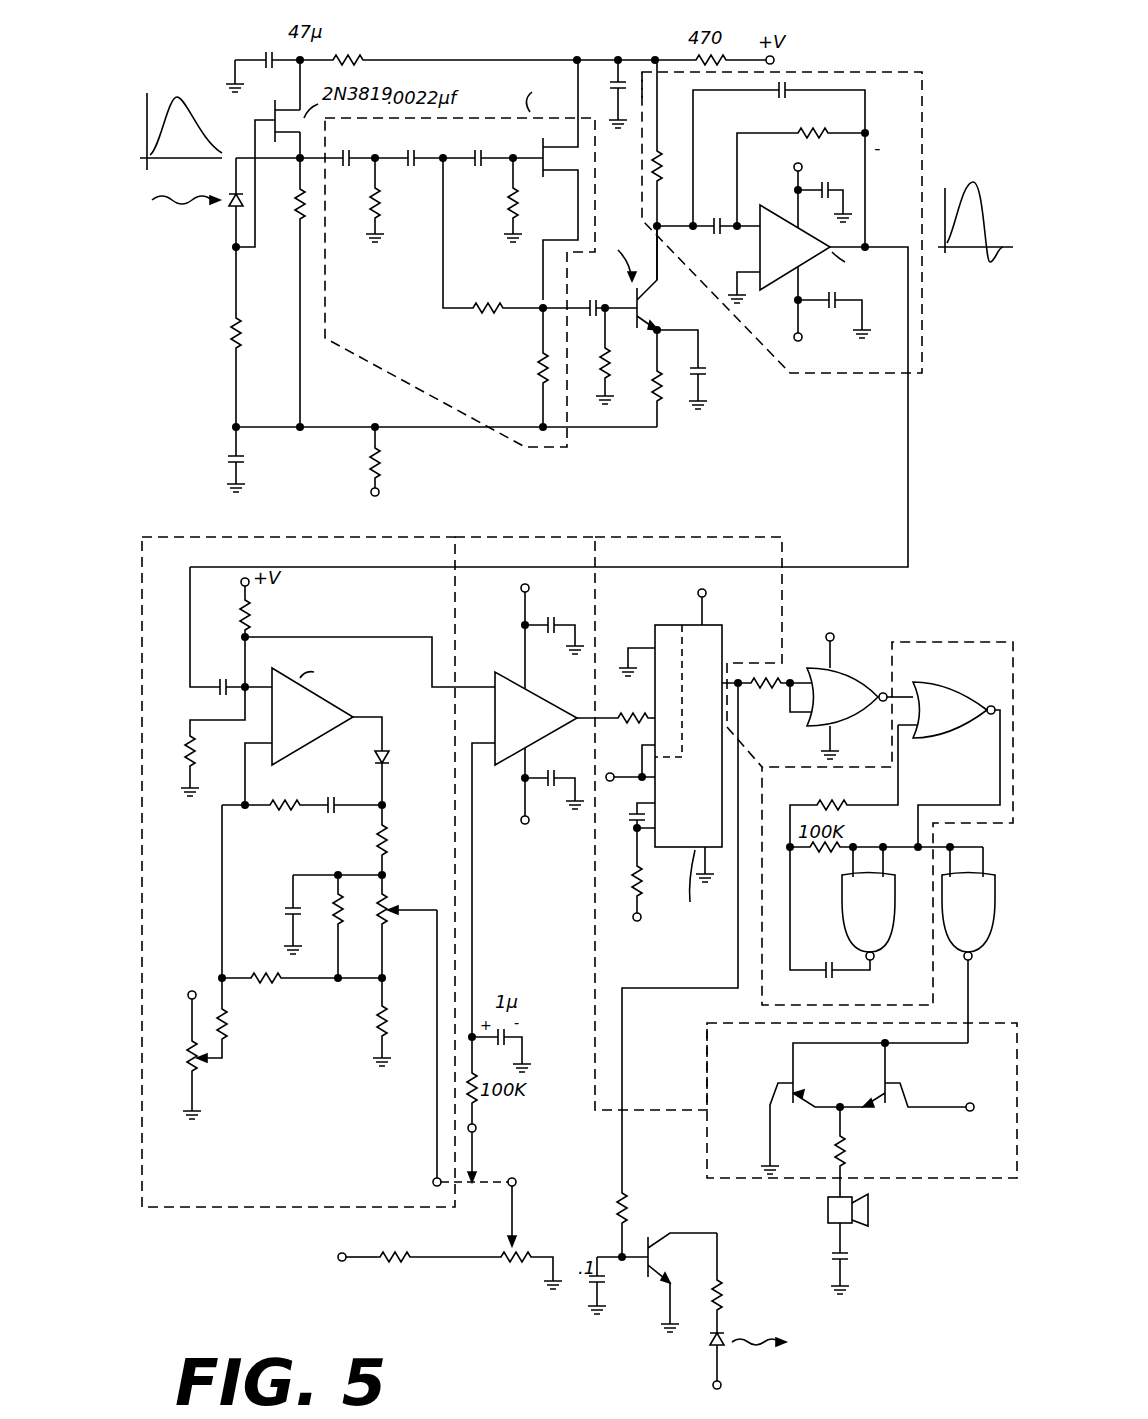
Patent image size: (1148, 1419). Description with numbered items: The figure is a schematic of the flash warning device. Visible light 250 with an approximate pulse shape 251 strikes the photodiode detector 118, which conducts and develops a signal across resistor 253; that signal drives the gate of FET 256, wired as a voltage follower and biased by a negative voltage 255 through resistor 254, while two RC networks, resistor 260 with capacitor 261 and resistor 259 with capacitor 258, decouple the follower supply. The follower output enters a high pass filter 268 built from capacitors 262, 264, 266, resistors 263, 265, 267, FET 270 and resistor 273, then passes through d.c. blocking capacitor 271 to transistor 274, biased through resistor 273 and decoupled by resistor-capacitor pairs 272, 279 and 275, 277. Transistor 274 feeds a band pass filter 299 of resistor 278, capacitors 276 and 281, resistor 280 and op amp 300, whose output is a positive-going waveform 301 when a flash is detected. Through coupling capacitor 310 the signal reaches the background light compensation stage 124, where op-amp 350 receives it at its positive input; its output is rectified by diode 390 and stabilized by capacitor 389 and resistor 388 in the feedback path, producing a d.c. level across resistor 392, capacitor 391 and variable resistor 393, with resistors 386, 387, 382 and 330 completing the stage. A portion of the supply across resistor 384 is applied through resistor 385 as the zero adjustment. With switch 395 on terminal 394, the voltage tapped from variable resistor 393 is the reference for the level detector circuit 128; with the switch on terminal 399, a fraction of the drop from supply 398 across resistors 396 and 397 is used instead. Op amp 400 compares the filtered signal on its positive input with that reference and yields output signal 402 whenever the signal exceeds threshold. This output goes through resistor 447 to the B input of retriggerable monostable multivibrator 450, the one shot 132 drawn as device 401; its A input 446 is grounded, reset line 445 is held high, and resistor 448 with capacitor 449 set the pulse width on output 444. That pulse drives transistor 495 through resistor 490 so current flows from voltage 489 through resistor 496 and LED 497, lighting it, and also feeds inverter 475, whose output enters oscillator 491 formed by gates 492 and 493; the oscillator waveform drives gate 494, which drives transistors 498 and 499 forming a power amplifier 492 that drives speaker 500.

The detector 118 is at (232, 210).
The background light compensation stage 124 is at (248, 1208).
The level detector circuit 128 is at (548, 1118).
The one shot 132 is at (784, 594).
The visible light 250 is at (162, 200).
The pulse shape 251 is at (190, 96).
The resistor 253 is at (230, 333).
The resistor 254 is at (261, 193).
The negative voltage 255 is at (379, 490).
The FET 256 is at (262, 112).
The capacitor 258 is at (258, 50).
The resistor 259 is at (355, 52).
The resistor 260 is at (370, 468).
The capacitor 261 is at (222, 460).
The capacitor 262 is at (300, 170).
The resistor 263 is at (298, 222).
The capacitor 264 is at (385, 215).
The resistor 265 is at (470, 312).
The capacitor 266 is at (474, 168).
The resistor 267 is at (508, 224).
The high pass filter 268 is at (541, 455).
The FET 270 is at (553, 160).
The d.c. blocking capacitor 271 is at (580, 298).
The resistor 272 is at (712, 72).
The resistor 273 is at (600, 370).
The transistor 274 is at (656, 312).
The resistor 275 is at (658, 390).
The capacitor 276 is at (712, 212).
The capacitor 277 is at (704, 378).
The resistor 278 is at (650, 172).
The capacitor 279 is at (615, 70).
The resistor 280 is at (812, 120).
The capacitor 281 is at (775, 96).
The band pass filter 299 is at (922, 373).
The op amp 300 is at (832, 244).
The waveform 301 is at (973, 178).
The coupling capacitor 310 is at (216, 688).
The resistor 330 is at (380, 1010).
The op-amp 350 is at (342, 700).
The resistor 382 is at (260, 984).
The resistor 384 is at (200, 1068).
The resistor 385 is at (228, 1042).
The resistor 386 is at (240, 610).
The resistor 387 is at (196, 762).
The resistor 388 is at (280, 814).
The capacitor 389 is at (330, 816).
The diode 390 is at (390, 756).
The capacitor 391 is at (286, 892).
The resistor 392 is at (330, 890).
The variable resistor 393 is at (392, 896).
The terminal 394 is at (434, 1182).
The switch 395 is at (477, 1128).
The resistor 396 is at (508, 1268).
The resistor 397 is at (378, 1266).
The positive voltage 398 is at (338, 1266).
The terminal 399 is at (516, 1186).
The op amp 400 is at (522, 678).
The monostable multivibrator 401 is at (670, 708).
The output signal 402 is at (590, 722).
The output terminal 444 is at (730, 670).
The reset line 445 is at (628, 770).
The A input terminal 446 is at (634, 656).
The resistor 447 is at (616, 708).
The resistor 448 is at (628, 876).
The capacitor 449 is at (630, 836).
The retriggerable monostable multivibrator 450 is at (722, 630).
The inverter 475 is at (850, 662).
The voltage 489 is at (721, 1384).
The resistor 490 is at (616, 1200).
The oscillator circuit 491 is at (944, 634).
The gate 492 is at (960, 668).
The gate 493 is at (842, 900).
The gate 494 is at (944, 920).
The transistor 495 is at (648, 1270).
The resistor 496 is at (726, 1298).
The LED 497 is at (726, 1334).
The transistor 498 is at (888, 1078).
The transistor 499 is at (778, 1080).
The speaker 500 is at (876, 1204).